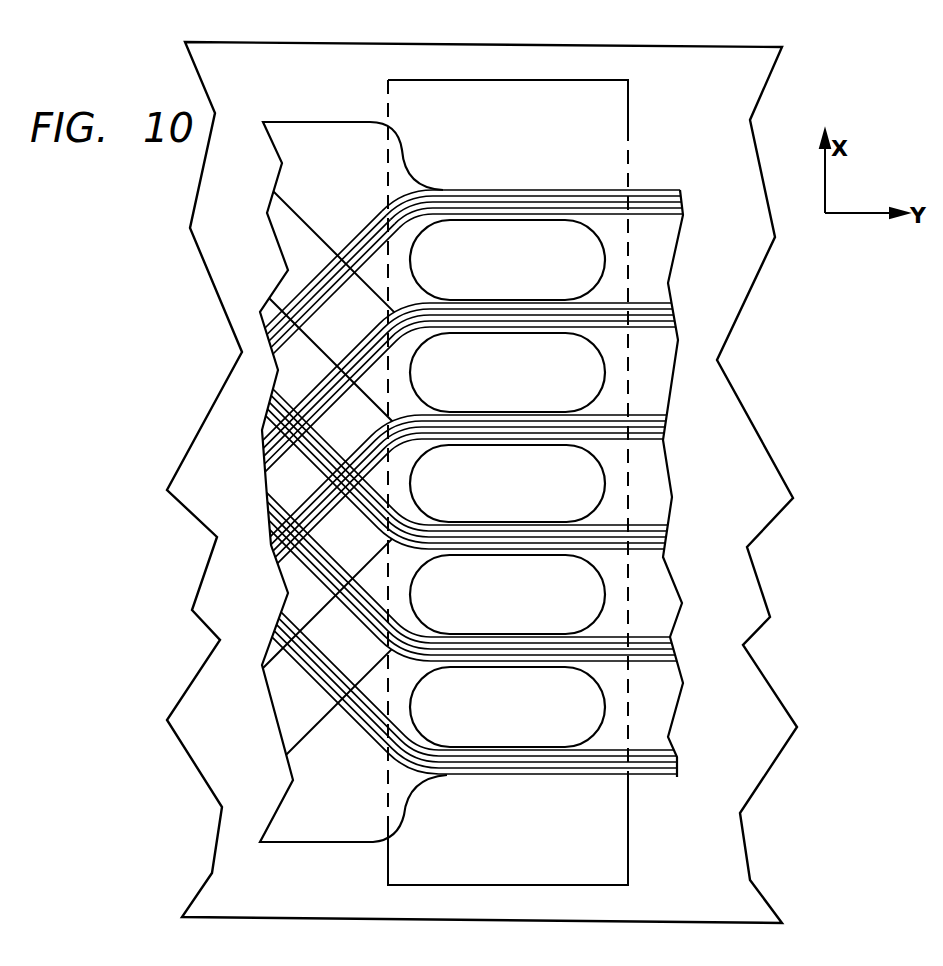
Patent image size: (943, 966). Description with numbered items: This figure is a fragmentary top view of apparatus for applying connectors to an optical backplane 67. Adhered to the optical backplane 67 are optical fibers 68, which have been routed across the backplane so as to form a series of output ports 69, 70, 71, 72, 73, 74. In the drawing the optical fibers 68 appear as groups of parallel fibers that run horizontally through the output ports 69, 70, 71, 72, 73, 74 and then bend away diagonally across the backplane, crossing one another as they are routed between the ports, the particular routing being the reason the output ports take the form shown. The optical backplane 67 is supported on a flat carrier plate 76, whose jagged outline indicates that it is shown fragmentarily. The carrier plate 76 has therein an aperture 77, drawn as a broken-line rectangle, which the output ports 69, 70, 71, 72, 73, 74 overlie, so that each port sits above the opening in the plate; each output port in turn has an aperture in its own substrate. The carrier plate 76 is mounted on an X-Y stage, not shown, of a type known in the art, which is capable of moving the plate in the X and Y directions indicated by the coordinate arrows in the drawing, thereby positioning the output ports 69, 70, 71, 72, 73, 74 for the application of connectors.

The optical backplane 67 is at (318, 128).
The optical fibers 68 is at (386, 216).
The output port 69 is at (517, 191).
The output port 70 is at (517, 304).
The output port 71 is at (517, 416).
The output port 72 is at (517, 526).
The output port 73 is at (517, 638).
The output port 74 is at (517, 751).
The carrier plate 76 is at (768, 80).
The aperture 77 is at (627, 112).